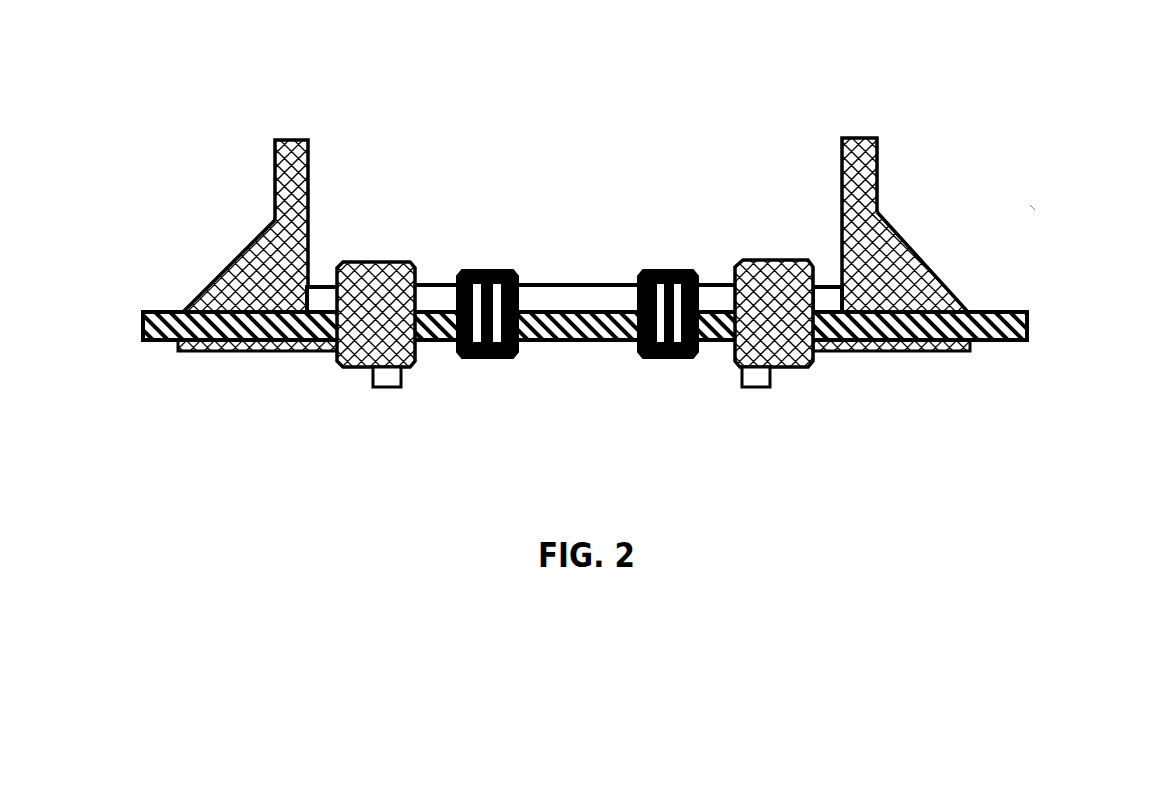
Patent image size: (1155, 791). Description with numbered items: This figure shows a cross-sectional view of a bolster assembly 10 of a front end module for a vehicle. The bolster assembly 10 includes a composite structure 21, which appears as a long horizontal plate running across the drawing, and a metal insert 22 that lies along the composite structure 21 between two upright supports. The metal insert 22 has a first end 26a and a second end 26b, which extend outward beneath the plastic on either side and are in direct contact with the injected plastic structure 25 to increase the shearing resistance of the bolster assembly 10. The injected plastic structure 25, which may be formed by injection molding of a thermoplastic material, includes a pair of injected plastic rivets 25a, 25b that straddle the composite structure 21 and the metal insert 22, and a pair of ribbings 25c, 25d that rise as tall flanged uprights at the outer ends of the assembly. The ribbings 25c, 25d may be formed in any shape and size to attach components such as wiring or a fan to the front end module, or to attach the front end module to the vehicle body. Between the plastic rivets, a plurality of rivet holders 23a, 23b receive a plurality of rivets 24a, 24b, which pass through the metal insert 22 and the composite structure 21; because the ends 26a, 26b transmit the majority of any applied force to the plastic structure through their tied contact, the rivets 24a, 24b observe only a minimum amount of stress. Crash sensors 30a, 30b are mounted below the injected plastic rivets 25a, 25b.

The bolster assembly 10 is at (1013, 223).
The composite structure 21 is at (156, 313).
The metal insert 22 is at (578, 300).
The rivet holder 23a is at (473, 307).
The rivet holder 23b is at (690, 303).
The rivet 24a is at (495, 270).
The rivet 24b is at (680, 267).
The injected plastic structure 25 is at (292, 157).
The injected plastic rivet 25a is at (362, 367).
The injected plastic rivet 25b is at (792, 367).
The ribbing 25c is at (257, 240).
The ribbing 25d is at (910, 245).
The first end of the metal insert 26a is at (293, 320).
The second end of the metal insert 26b is at (863, 330).
The crash sensor 30a is at (388, 387).
The crash sensor 30b is at (752, 387).